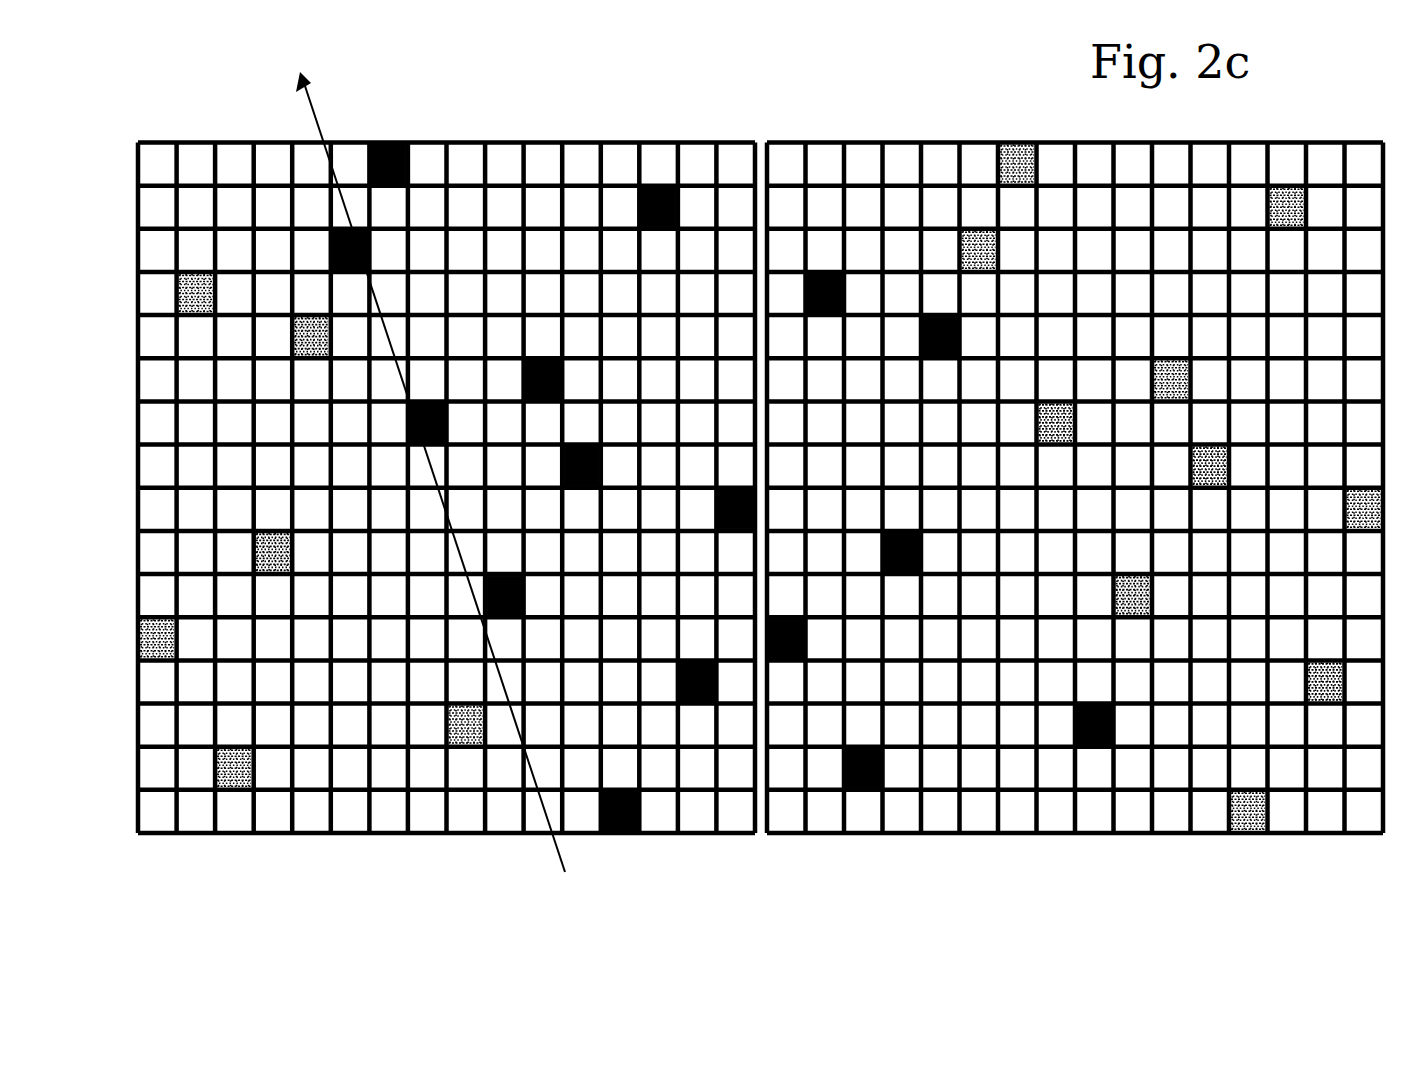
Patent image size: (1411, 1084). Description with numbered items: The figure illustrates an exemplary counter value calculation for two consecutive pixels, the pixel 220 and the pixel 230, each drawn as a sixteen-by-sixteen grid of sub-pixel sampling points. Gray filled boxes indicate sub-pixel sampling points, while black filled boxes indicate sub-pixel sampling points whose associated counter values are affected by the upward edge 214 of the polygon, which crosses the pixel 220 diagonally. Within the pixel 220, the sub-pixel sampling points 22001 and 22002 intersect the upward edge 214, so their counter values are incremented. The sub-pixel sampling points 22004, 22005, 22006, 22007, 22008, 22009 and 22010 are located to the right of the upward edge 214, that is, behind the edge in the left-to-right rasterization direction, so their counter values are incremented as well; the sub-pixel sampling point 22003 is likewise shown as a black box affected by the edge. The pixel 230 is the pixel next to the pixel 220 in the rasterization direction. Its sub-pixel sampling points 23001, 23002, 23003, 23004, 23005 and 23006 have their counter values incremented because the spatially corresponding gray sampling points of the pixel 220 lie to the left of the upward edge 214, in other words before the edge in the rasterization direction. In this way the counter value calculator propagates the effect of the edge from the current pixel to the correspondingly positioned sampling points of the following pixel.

The pixel 220 is at (147, 124).
The upward edge 214 is at (318, 112).
The sub-pixel sampling point 22001 is at (332, 253).
The sub-pixel sampling point 22002 is at (450, 420).
The sub-pixel sampling point 22003 is at (386, 146).
The sub-pixel sampling point 22004 is at (655, 186).
The sub-pixel sampling point 22005 is at (546, 372).
The sub-pixel sampling point 22006 is at (598, 462).
The sub-pixel sampling point 22007 is at (722, 507).
The sub-pixel sampling point 22008 is at (497, 594).
The sub-pixel sampling point 22009 is at (703, 706).
The sub-pixel sampling point 22010 is at (623, 838).
The pixel 230 is at (1258, 123).
The sub-pixel sampling point 23001 is at (825, 273).
The sub-pixel sampling point 23002 is at (940, 318).
The sub-pixel sampling point 23003 is at (920, 577).
The sub-pixel sampling point 23004 is at (790, 663).
The sub-pixel sampling point 23005 is at (1093, 750).
The sub-pixel sampling point 23006 is at (863, 793).